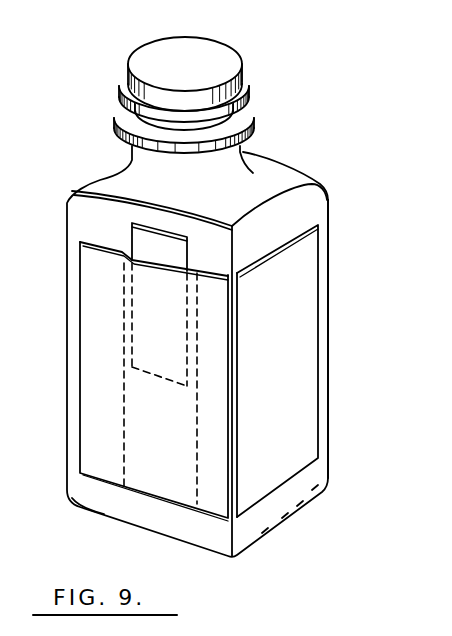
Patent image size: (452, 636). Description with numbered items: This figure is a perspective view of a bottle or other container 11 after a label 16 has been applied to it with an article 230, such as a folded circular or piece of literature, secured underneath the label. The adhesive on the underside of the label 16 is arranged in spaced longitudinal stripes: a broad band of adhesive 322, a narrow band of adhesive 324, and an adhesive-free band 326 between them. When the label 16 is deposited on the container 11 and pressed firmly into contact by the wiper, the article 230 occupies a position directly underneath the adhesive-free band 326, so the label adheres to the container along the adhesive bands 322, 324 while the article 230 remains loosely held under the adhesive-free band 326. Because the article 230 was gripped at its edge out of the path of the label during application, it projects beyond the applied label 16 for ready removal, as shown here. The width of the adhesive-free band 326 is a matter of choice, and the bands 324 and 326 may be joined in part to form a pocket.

The bottle or other container 11 is at (312, 201).
The label 16 is at (305, 331).
The article 230 is at (132, 238).
The broad band of adhesive 322 is at (303, 396).
The narrow band of adhesive 324 is at (95, 382).
The adhesive-free band 326 is at (155, 482).